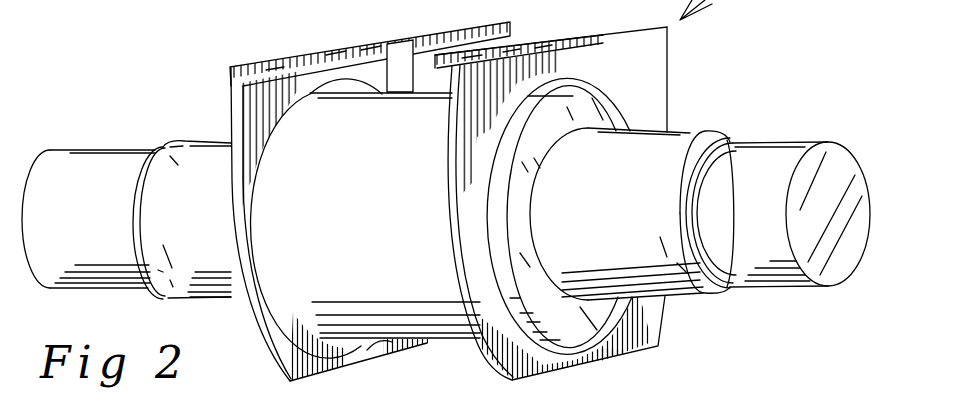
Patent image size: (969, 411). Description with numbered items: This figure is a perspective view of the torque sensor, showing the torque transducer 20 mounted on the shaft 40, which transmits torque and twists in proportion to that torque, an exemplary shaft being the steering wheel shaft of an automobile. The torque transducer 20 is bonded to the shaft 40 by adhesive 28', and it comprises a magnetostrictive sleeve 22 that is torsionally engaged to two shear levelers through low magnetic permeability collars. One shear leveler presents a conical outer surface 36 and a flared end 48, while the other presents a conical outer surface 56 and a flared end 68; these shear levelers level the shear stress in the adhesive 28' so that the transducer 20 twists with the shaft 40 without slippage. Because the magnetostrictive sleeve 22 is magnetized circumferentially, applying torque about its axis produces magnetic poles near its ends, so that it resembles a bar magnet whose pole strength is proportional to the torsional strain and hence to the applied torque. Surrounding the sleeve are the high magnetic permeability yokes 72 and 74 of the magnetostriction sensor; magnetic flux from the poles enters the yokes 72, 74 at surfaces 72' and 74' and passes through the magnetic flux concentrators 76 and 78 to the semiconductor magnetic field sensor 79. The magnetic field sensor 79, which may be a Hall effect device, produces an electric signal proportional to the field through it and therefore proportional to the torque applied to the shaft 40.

The torque transducer 20 is at (657, 352).
The magnetostrictive sleeve 22 is at (390, 210).
The adhesive 28' is at (780, 188).
The conical outer surface 36 is at (219, 221).
The shaft 40 is at (102, 221).
The flared end 48 is at (160, 147).
The conical outer surface 56 is at (625, 221).
The flared end 68 is at (686, 140).
The yoke 72 is at (358, 357).
The surface 72' is at (422, 363).
The yoke 74 is at (551, 203).
The surface 74' is at (644, 347).
The magnetic flux concentrator 76 is at (307, 62).
The magnetic flux concentrator 78 is at (492, 48).
The magnetic field sensor 79 is at (427, 40).